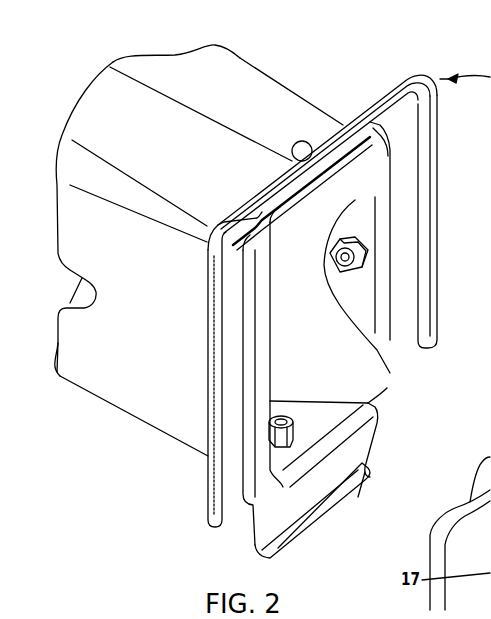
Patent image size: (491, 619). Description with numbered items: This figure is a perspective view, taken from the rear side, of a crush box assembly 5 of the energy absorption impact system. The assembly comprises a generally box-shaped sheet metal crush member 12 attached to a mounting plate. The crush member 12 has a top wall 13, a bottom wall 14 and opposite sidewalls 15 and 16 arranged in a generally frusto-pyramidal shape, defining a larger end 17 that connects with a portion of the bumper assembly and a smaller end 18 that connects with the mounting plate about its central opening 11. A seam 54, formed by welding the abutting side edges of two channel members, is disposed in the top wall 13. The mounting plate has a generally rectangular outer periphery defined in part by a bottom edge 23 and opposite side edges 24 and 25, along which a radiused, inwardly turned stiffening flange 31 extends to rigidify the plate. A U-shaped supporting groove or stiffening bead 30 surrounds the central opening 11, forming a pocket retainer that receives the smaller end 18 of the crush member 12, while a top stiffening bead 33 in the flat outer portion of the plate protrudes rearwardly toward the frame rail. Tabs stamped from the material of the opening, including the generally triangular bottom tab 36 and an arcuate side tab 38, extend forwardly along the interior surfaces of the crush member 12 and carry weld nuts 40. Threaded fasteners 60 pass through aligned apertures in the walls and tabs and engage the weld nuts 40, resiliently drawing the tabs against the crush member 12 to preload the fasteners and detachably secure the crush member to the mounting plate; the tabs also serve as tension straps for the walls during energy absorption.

The crush box assembly 5 is at (88, 61).
The central opening 11 is at (366, 383).
The crush member 12 is at (256, 63).
The top wall 13 is at (268, 93).
The bottom wall 14 is at (134, 420).
The sidewall 15 is at (112, 380).
The sidewall 16 is at (320, 108).
The larger end 17 is at (128, 53).
The smaller end 18 is at (386, 378).
The bottom edge 23 is at (338, 512).
The side edge 24 is at (212, 485).
The side edge 25 is at (440, 292).
The stiffening bead 30 is at (383, 333).
The stiffening flange 31 is at (212, 392).
The top stiffening bead 33 is at (290, 197).
The bottom tab 36 is at (328, 401).
The side tab 38 is at (328, 240).
The weld nut 40 is at (335, 267).
The seam 54 is at (197, 107).
The threaded fastener 60 is at (302, 141).